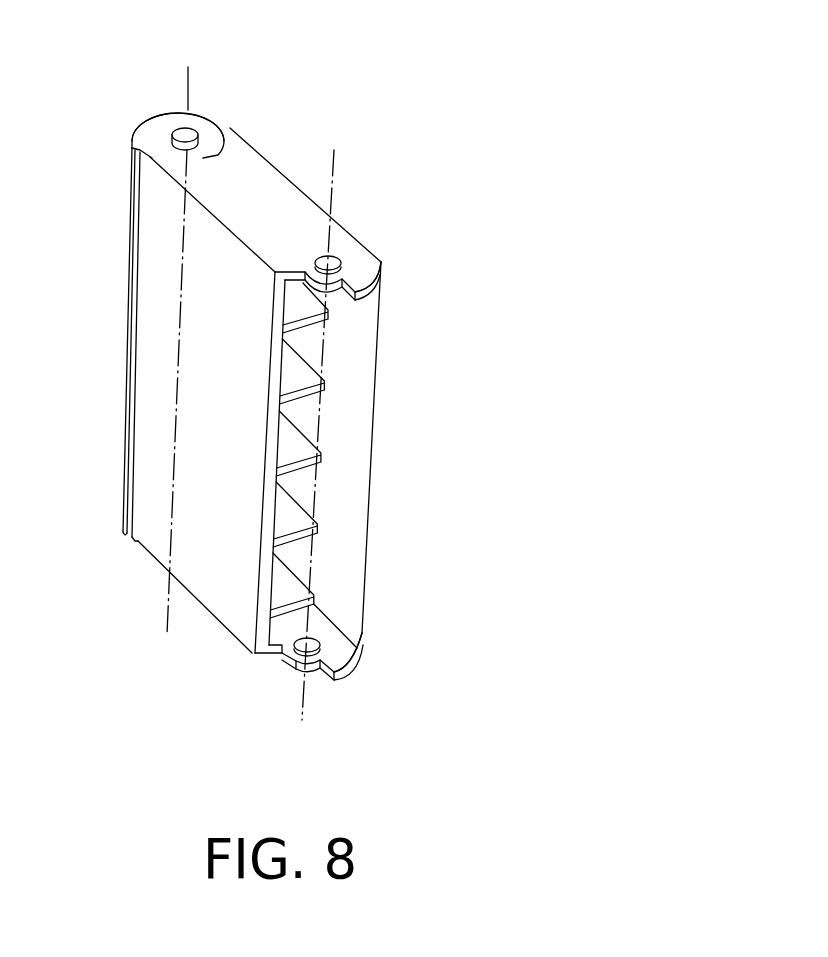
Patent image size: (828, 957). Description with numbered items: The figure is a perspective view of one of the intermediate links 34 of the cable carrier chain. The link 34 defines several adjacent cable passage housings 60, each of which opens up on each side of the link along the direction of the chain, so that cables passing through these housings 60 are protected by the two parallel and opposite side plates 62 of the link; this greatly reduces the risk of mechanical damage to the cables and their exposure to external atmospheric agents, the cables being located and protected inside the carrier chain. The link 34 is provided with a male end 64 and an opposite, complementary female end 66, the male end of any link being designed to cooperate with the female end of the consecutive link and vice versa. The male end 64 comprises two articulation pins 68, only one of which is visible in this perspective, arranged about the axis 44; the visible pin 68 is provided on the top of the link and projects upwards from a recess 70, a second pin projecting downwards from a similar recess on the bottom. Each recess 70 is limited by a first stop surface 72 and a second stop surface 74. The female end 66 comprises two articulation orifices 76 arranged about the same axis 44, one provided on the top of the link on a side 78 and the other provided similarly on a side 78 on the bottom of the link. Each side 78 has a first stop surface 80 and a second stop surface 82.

The intermediate link 34 is at (460, 198).
The axis 44 is at (190, 78).
The cable passage housings 60 is at (310, 348).
The side plates 62 is at (153, 355).
The male end 64 is at (161, 104).
The female end 66 is at (392, 272).
The articulation pin 68 is at (191, 130).
The recess 70 is at (147, 132).
The first stop surface 72 is at (134, 145).
The second stop surface 74 is at (226, 124).
The articulation orifice 76 is at (333, 257).
The side 78 is at (368, 263).
The first stop surface 80 is at (297, 272).
The second stop surface 82 is at (350, 293).